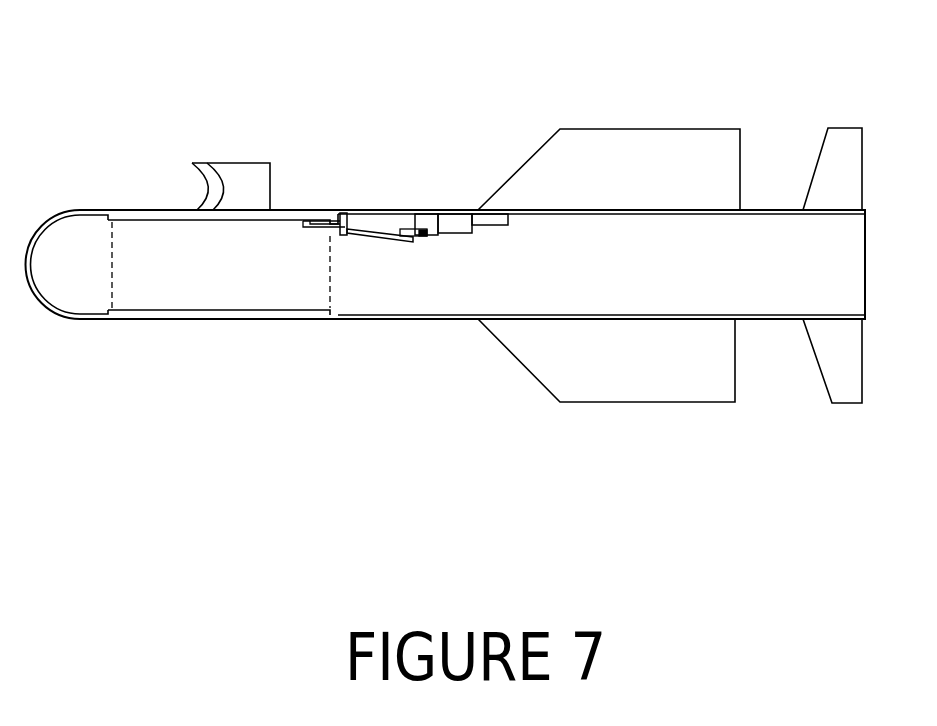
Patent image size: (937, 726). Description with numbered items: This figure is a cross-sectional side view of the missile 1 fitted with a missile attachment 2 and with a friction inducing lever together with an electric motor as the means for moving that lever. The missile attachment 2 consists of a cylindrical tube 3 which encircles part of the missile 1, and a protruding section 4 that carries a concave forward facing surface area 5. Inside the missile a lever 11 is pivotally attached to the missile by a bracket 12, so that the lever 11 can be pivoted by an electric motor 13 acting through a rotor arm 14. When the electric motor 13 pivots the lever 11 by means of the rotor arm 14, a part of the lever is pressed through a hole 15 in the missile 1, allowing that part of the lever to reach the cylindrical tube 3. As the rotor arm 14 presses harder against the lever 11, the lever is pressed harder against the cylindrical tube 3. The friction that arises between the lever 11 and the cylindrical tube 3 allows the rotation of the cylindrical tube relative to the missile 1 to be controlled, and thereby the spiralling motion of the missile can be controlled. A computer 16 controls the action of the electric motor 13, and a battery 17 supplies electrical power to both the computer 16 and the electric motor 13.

The missile 1 is at (82, 325).
The missile attachment 2 is at (182, 327).
The cylindrical tube 3 is at (288, 320).
The protruding section 4 is at (217, 157).
The concave forward facing surface area 5 is at (190, 192).
The lever 11 is at (360, 227).
The bracket 12 is at (340, 215).
The electric motor 13 is at (433, 220).
The rotor arm 14 is at (408, 235).
The hole 15 is at (300, 222).
The computer 16 is at (452, 230).
The battery 17 is at (490, 227).